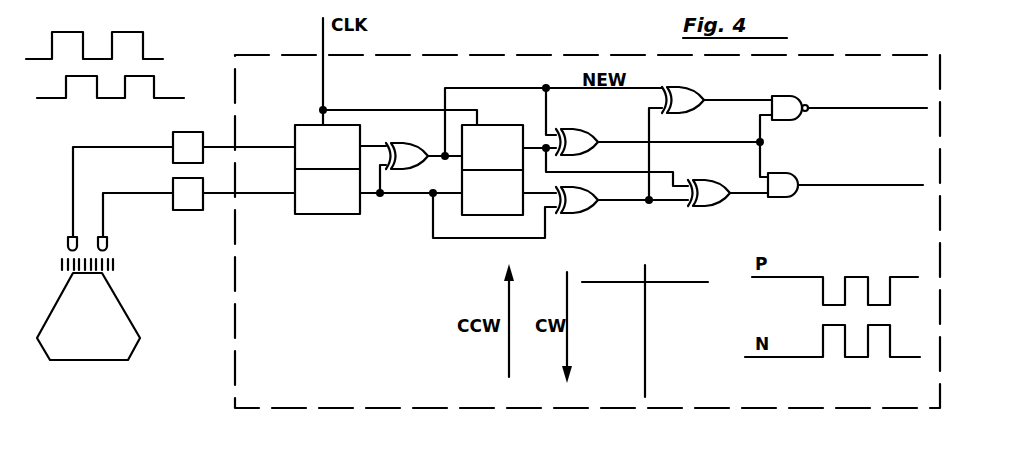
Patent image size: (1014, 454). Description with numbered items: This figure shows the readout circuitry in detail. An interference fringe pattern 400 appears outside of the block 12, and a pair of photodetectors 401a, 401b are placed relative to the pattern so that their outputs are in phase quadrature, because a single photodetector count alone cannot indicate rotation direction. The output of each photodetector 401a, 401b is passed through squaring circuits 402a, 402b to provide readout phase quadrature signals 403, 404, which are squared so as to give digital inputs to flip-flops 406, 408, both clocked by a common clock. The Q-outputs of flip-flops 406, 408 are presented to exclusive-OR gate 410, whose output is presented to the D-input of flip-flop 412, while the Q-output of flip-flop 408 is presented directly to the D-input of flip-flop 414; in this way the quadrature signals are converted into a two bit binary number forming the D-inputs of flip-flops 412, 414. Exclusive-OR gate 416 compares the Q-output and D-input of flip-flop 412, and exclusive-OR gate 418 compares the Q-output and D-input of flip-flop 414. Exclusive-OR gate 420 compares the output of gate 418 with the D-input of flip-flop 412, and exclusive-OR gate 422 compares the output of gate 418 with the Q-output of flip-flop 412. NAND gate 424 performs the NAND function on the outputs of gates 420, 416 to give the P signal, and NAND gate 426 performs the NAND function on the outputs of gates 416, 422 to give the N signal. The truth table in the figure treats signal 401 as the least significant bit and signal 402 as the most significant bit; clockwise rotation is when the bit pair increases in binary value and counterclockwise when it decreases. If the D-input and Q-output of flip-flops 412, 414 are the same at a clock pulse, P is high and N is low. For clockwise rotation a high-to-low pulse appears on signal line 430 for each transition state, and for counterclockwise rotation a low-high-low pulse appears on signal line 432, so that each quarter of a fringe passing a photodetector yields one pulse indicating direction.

The block 12 is at (98, 362).
The interference fringe pattern 400 is at (56, 263).
The photodetector 401a is at (67, 238).
The photodetector 401b is at (108, 243).
The signal 401 is at (686, 325).
The squaring circuit 402a is at (173, 134).
The squaring circuit 402b is at (172, 200).
The signal 402 is at (616, 325).
The readout phase quadrature signal 403 is at (72, 31).
The readout phase quadrature signal 404 is at (155, 85).
The flip-flop 406 is at (350, 124).
The flip-flop 408 is at (310, 215).
The exclusive-OR gate 410 is at (407, 142).
The flip-flop 412 is at (498, 125).
The flip-flop 414 is at (455, 210).
The exclusive-OR gate 416 is at (586, 128).
The exclusive-OR gate 418 is at (588, 213).
The exclusive-OR gate 420 is at (700, 91).
The exclusive-OR gate 422 is at (718, 206).
The NAND gate 424 is at (803, 97).
The NAND gate 426 is at (800, 197).
The signal line 430 is at (866, 110).
The signal line 432 is at (870, 184).